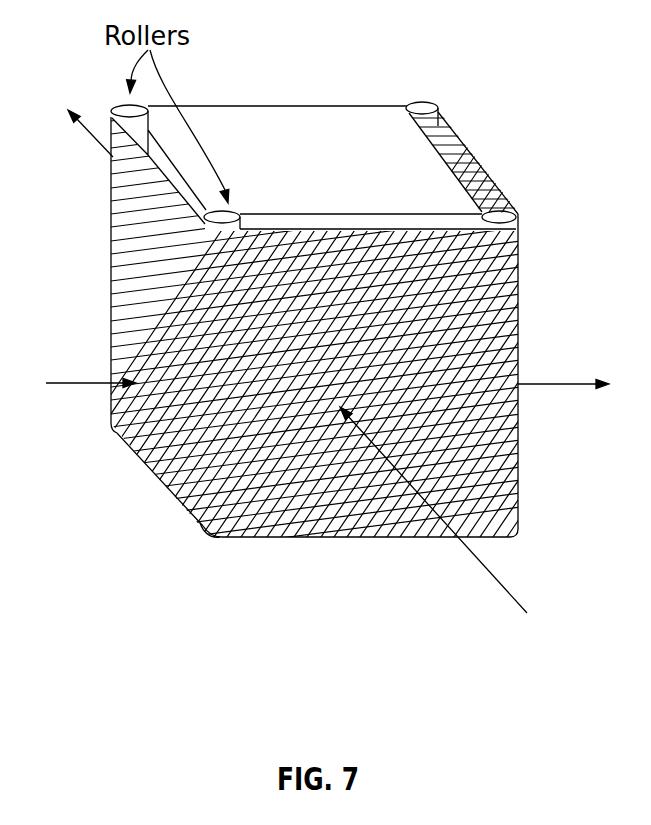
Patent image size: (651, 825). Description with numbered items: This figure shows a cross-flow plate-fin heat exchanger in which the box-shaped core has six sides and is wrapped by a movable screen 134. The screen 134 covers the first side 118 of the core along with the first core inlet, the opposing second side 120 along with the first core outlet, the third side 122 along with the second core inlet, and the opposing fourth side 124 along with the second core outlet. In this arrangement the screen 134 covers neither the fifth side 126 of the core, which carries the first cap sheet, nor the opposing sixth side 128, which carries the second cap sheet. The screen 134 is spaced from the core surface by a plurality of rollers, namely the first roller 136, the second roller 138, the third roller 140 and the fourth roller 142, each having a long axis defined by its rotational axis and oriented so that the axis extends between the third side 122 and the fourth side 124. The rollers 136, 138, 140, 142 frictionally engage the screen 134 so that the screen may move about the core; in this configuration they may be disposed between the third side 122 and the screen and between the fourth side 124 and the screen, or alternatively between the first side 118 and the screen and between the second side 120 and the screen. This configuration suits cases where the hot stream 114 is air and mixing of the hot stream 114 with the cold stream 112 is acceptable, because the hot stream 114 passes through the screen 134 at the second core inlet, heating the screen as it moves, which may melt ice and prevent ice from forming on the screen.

The cold stream 112 is at (517, 598).
The hot stream 114 is at (72, 383).
The first side 118 is at (367, 498).
The second side 120 is at (337, 105).
The third side 122 is at (147, 250).
The fourth side 124 is at (518, 448).
The fifth side 126 is at (446, 181).
The sixth side 128 is at (282, 538).
The screen 134 is at (160, 443).
The first roller 136 is at (423, 108).
The second roller 138 is at (127, 108).
The third roller 140 is at (208, 543).
The fourth roller 142 is at (498, 215).